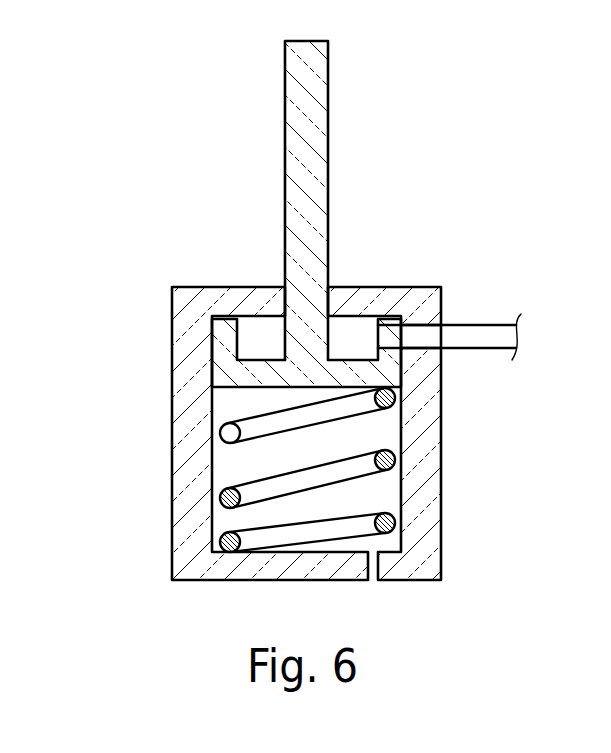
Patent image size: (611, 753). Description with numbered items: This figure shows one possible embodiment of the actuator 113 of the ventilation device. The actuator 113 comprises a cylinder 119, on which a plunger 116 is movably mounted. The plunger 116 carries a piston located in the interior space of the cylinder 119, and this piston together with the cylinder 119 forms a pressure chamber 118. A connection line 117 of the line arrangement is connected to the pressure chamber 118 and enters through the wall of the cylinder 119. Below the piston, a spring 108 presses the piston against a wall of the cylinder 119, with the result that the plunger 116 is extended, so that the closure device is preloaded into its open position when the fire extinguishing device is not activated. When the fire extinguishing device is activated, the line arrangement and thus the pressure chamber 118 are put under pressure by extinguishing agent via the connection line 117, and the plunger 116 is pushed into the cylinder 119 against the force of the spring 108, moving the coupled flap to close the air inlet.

The actuator 113 is at (150, 249).
The plunger 116 is at (328, 92).
The connection line 117 is at (483, 330).
The pressure chamber 118 is at (261, 333).
The cylinder 119 is at (172, 518).
The spring 108 is at (357, 472).